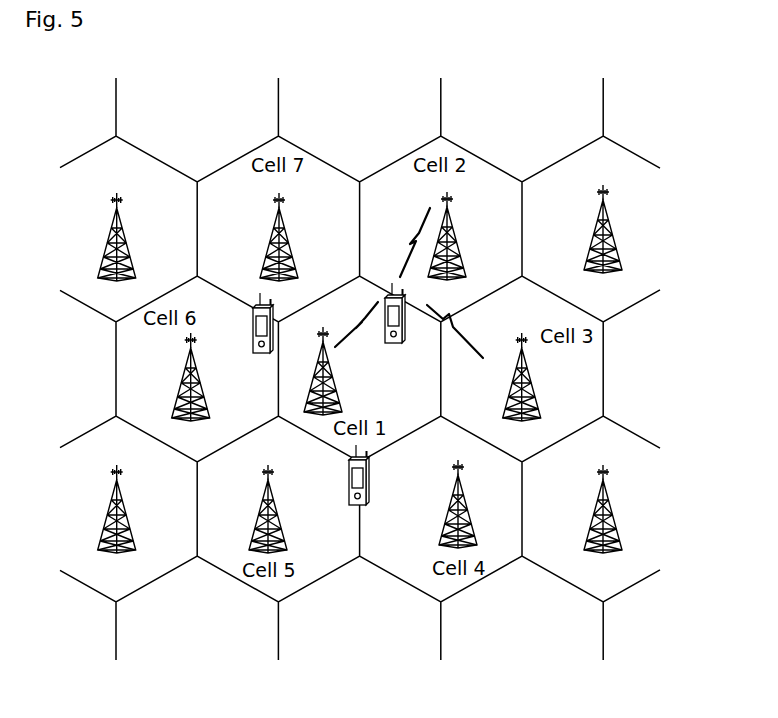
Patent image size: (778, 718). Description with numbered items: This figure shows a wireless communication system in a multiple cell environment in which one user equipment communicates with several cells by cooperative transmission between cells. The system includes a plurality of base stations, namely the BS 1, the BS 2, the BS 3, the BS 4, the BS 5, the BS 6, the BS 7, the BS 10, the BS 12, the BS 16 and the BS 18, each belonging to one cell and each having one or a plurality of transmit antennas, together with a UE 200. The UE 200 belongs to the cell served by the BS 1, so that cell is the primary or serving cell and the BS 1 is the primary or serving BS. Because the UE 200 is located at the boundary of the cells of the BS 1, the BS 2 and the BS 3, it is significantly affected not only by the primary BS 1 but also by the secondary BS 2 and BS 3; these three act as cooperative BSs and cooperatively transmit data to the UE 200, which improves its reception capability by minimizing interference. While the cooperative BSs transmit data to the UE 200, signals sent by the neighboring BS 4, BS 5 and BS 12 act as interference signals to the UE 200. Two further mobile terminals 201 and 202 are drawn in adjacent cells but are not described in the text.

The BS 1 is at (343, 398).
The BS 2 is at (466, 242).
The BS 3 is at (541, 386).
The BS 4 is at (477, 510).
The BS 5 is at (287, 512).
The BS 6 is at (177, 384).
The BS 7 is at (298, 245).
The BS 10 is at (622, 237).
The BS 12 is at (622, 517).
The BS 16 is at (136, 516).
The BS 18 is at (136, 246).
The UE 200 is at (405, 343).
The mobile terminal 201 is at (370, 478).
The mobile terminal 202 is at (255, 353).